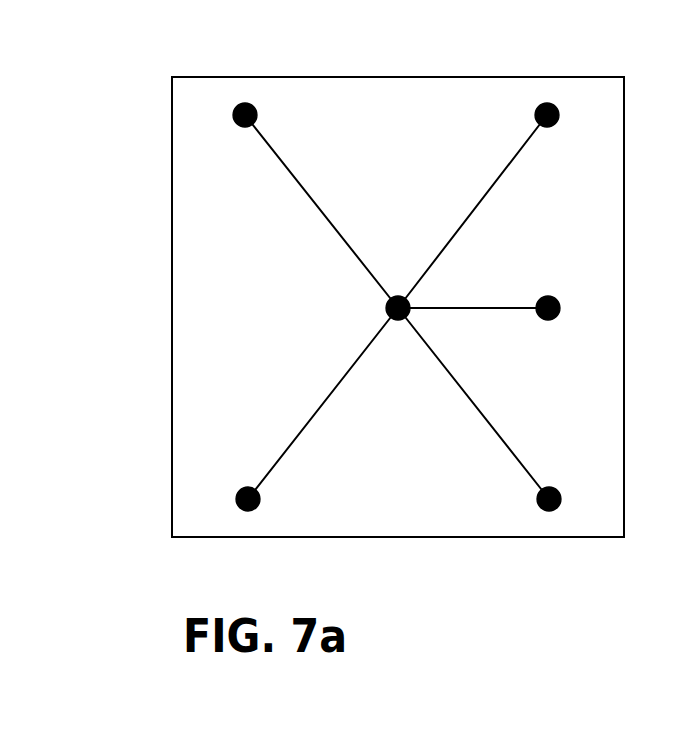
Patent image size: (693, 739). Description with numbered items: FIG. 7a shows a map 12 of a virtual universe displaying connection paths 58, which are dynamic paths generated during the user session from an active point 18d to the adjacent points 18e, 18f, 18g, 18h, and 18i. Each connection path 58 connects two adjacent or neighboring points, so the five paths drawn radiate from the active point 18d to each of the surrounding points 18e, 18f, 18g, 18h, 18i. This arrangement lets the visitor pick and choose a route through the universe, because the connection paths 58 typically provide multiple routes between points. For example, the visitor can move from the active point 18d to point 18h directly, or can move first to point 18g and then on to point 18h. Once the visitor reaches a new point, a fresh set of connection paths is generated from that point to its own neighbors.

The map 12 is at (172, 428).
The active point 18d is at (386, 310).
The adjacent point 18e is at (233, 118).
The adjacent point 18f is at (557, 126).
The adjacent point 18g is at (553, 320).
The adjacent point 18h is at (549, 511).
The adjacent point 18i is at (243, 512).
The connection paths 58 is at (477, 203).